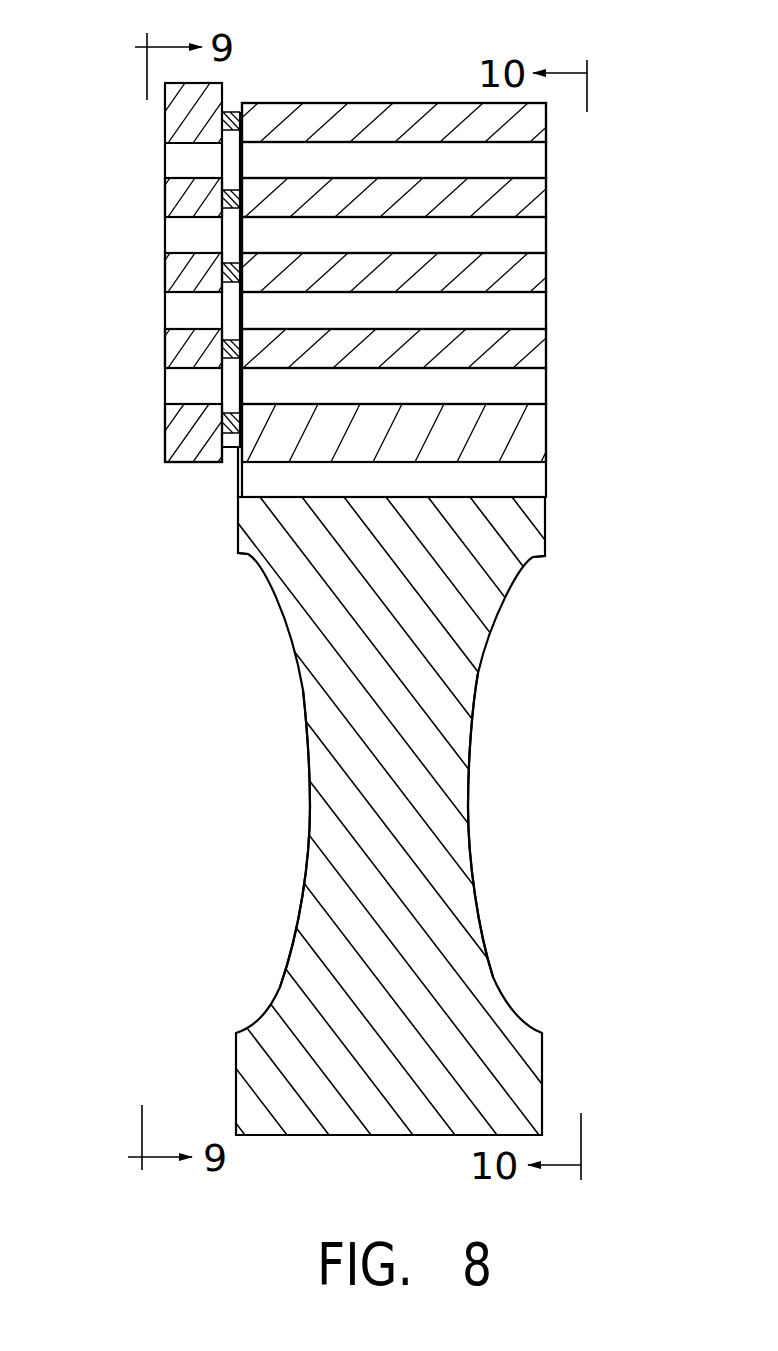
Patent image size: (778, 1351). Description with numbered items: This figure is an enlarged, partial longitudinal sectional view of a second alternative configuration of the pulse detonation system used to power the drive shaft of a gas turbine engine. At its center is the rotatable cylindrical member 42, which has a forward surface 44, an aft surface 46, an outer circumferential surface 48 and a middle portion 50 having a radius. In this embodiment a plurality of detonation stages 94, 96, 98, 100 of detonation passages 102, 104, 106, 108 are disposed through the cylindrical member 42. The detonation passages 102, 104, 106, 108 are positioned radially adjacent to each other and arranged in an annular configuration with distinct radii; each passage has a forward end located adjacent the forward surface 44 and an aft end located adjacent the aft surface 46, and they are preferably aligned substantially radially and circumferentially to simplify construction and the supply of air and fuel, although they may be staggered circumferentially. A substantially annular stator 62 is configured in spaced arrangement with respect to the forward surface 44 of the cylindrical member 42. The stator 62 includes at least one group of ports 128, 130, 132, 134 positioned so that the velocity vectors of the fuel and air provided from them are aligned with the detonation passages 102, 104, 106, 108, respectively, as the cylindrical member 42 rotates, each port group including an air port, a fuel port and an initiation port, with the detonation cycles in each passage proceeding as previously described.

The rotatable cylindrical member 42 is at (389, 791).
The aft surface 46 is at (550, 520).
The middle portion 50 is at (427, 823).
The outer circumferential surface 48 is at (385, 252).
The detonation stage 100 is at (551, 140).
The detonation stage 98 is at (551, 215).
The detonation stage 96 is at (551, 290).
The detonation stage 94 is at (551, 367).
The detonation passage 106 is at (453, 145).
The detonation passage 108 is at (453, 218).
The detonation passage 104 is at (453, 293).
The detonation passage 102 is at (513, 407).
The forward surface 44 is at (238, 447).
The stator 62 is at (148, 303).
The port 134 is at (163, 180).
The port 132 is at (163, 255).
The port 130 is at (163, 330).
The port 128 is at (163, 405).